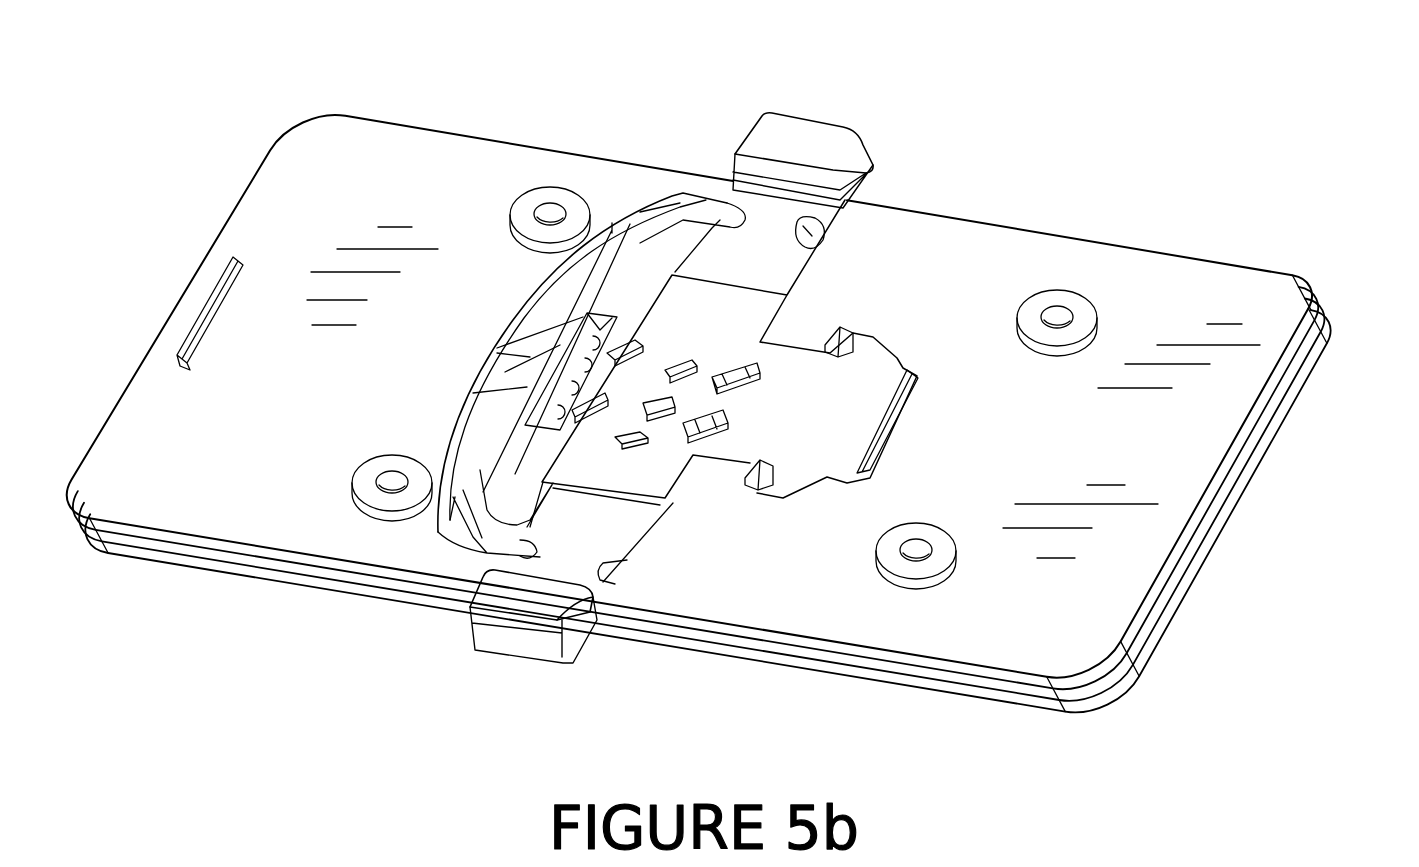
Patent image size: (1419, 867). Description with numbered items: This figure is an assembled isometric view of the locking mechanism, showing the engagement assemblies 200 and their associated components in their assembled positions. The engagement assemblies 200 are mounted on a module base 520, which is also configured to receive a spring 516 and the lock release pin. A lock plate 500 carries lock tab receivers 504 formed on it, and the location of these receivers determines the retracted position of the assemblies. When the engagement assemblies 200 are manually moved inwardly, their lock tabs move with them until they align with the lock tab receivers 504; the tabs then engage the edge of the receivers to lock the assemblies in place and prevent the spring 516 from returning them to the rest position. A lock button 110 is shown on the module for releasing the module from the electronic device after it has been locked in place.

The lock button 110 is at (836, 123).
The engagement assembly 200 is at (677, 503).
The lock plate 500 is at (907, 418).
The lock tab receiver 504 is at (690, 352).
The spring 516 is at (627, 236).
The module base 520 is at (1315, 288).